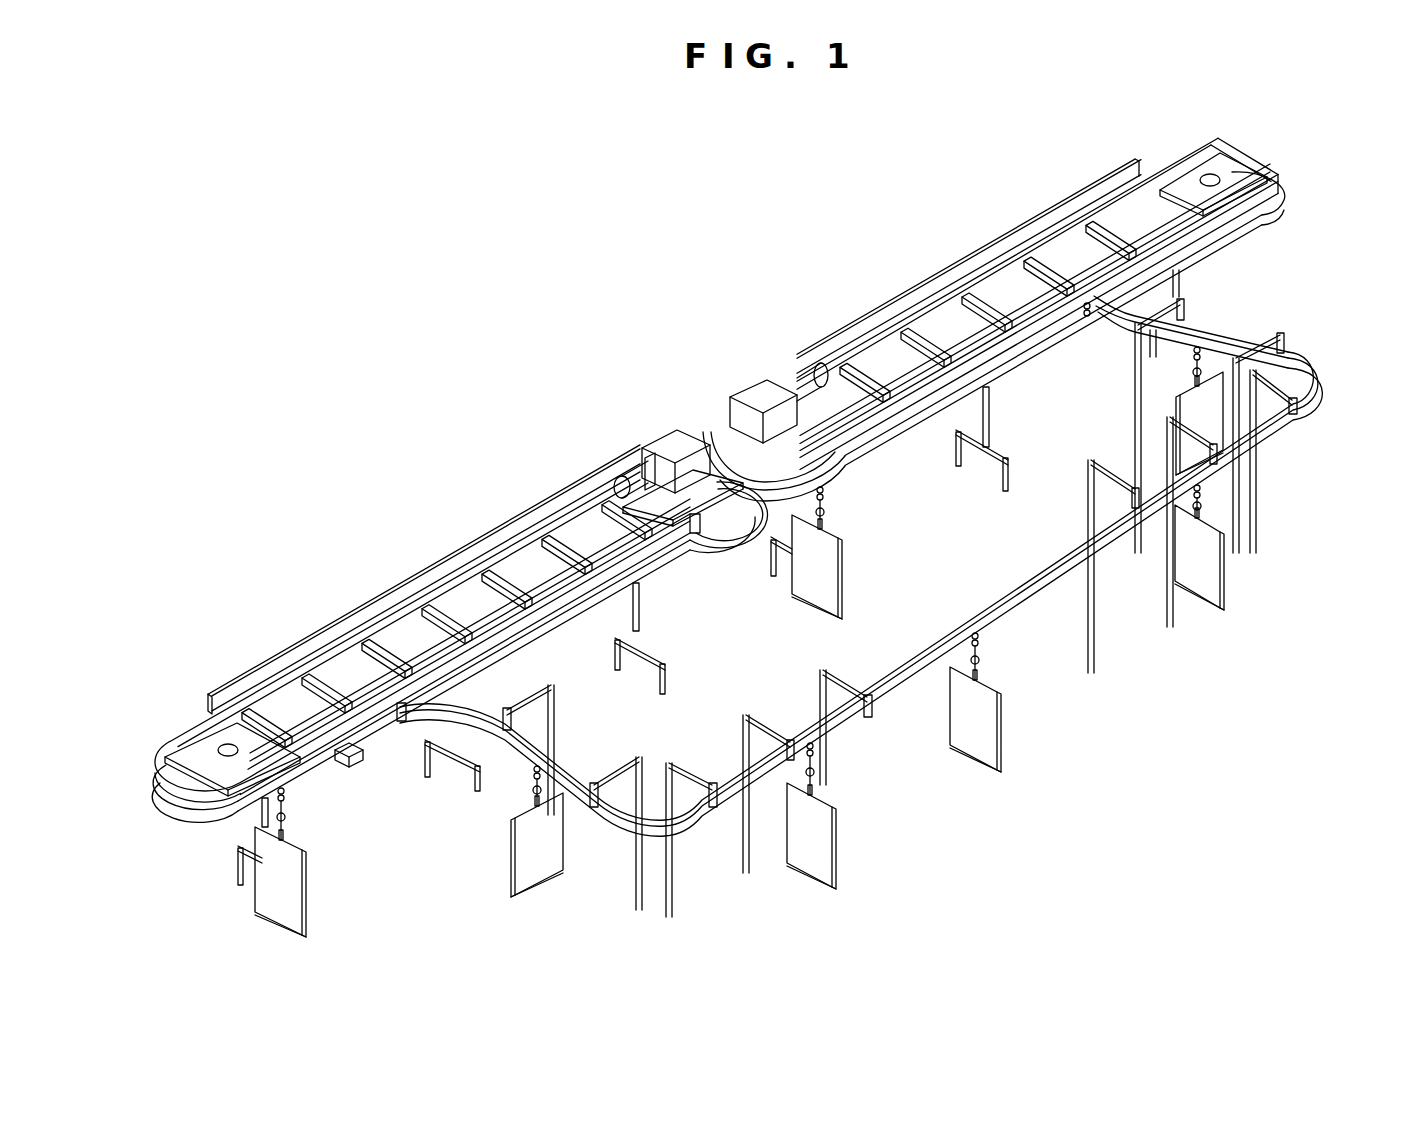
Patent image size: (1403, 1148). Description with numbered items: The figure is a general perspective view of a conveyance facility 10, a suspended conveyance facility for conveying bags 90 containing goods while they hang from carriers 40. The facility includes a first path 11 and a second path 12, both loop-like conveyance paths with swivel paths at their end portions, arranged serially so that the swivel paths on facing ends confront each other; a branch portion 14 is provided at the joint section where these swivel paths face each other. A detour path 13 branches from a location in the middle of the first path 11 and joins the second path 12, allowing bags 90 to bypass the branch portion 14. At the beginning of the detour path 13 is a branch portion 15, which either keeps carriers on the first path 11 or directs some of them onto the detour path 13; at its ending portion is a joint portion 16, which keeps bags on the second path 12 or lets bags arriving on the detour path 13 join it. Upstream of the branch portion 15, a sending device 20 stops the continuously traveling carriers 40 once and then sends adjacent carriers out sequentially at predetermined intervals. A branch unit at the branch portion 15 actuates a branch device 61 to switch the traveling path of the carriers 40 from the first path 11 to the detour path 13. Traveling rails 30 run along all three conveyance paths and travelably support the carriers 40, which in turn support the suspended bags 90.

The conveyance facility 10 is at (1290, 138).
The first path 11 is at (173, 717).
The second path 12 is at (1162, 147).
The detour path 13 is at (1000, 580).
The branch portion 14 is at (693, 410).
The branch portion 15 is at (412, 672).
The joint portion 16 is at (1114, 334).
The sending device 20 is at (352, 770).
The traveling rails 30 is at (183, 793).
The carriers 40 is at (290, 810).
The branch device 61 is at (406, 724).
The bags 90 is at (307, 918).